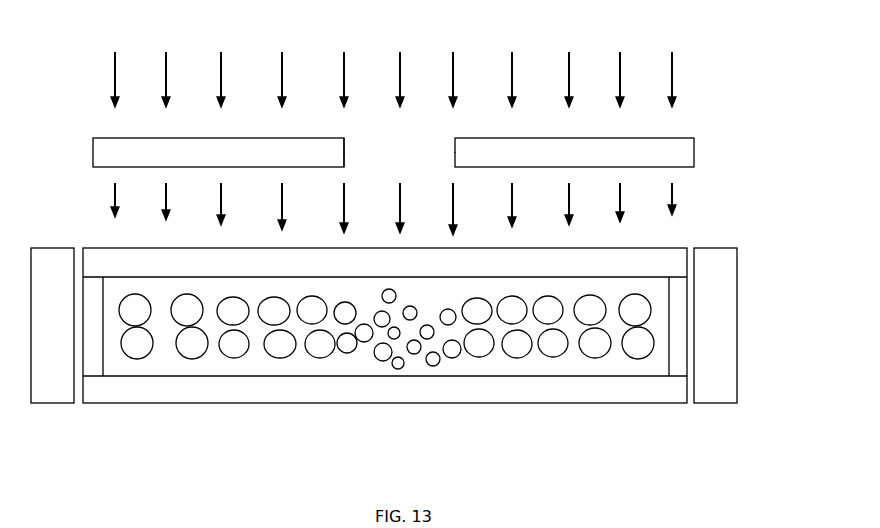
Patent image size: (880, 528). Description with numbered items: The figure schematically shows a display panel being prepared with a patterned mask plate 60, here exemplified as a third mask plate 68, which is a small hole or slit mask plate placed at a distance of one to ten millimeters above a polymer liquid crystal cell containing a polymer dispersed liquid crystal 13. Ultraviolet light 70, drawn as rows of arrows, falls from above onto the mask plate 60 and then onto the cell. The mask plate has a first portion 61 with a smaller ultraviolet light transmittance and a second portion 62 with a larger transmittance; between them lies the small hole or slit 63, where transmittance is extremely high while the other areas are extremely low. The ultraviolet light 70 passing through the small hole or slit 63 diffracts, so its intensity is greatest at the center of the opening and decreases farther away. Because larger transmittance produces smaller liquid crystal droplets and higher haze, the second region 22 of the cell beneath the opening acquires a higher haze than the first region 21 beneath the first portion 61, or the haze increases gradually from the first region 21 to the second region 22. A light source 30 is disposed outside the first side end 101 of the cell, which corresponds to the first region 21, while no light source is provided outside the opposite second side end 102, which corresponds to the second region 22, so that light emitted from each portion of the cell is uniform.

The polymer dispersed liquid crystal 13 is at (638, 338).
The first region 21 is at (117, 350).
The second region 22 is at (415, 355).
The light source 30 is at (720, 365).
The mask plate 60 is at (411, 96).
The third mask plate 68 is at (574, 152).
The first portion 61 is at (105, 147).
The second portion 62 is at (344, 150).
The small hole or slit 63 is at (403, 157).
The ultraviolet light 70 is at (672, 75).
The first side end 101 is at (103, 345).
The second side end 102 is at (667, 345).